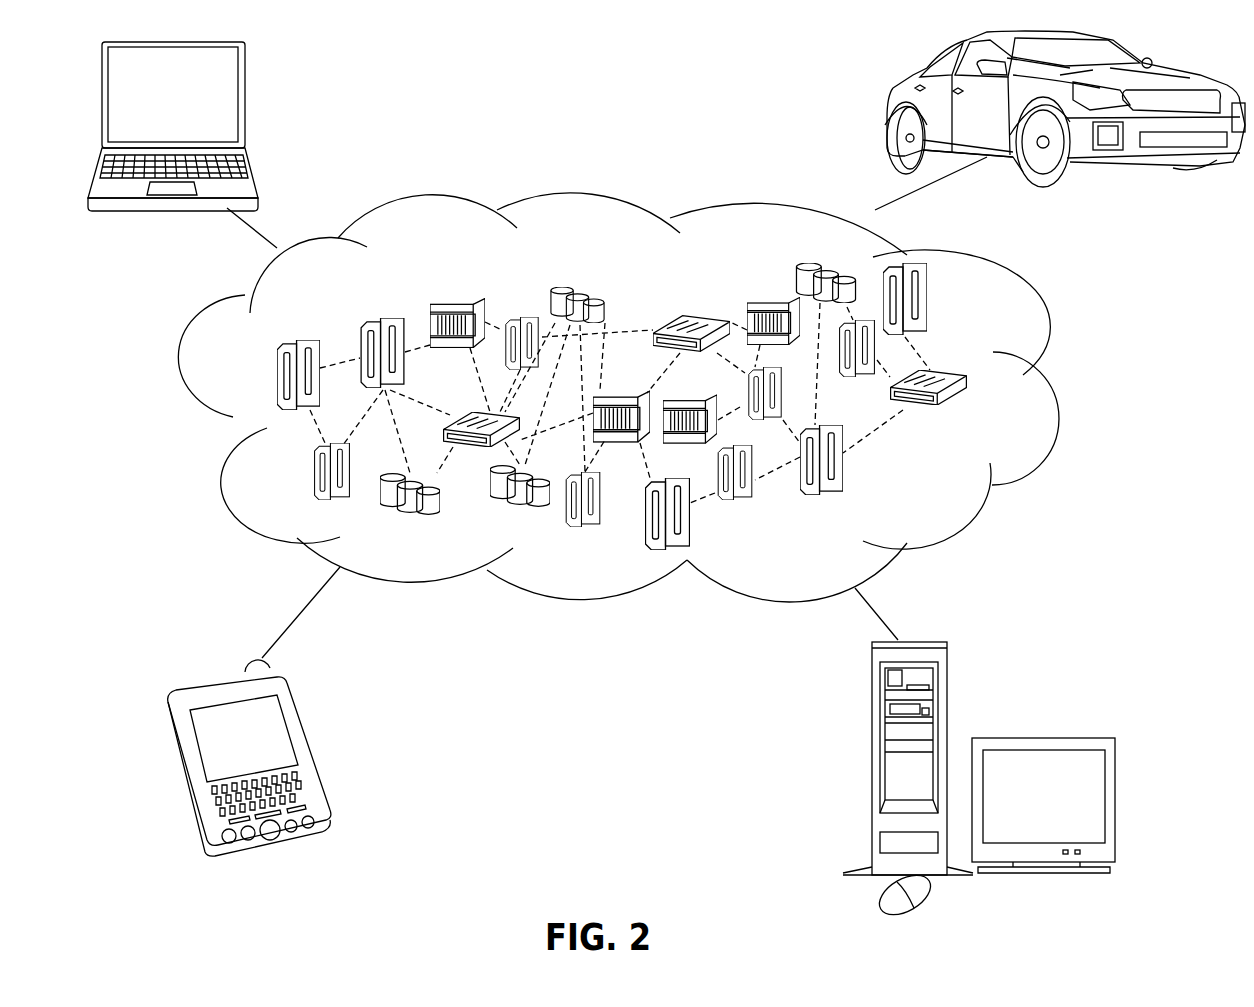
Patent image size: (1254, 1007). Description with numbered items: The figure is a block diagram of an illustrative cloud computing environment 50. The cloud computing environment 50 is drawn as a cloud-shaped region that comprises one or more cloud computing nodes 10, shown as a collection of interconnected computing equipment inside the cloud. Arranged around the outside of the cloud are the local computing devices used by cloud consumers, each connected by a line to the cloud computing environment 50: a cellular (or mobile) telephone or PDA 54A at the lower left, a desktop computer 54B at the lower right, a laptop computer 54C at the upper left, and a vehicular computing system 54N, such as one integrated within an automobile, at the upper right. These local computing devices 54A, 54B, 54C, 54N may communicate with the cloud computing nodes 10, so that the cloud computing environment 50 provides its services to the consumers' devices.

The cloud computing node 10 is at (947, 490).
The cloud computing environment 50 is at (1043, 387).
The cellular telephone or PDA 54A is at (300, 717).
The desktop computer 54B is at (872, 702).
The laptop computer 54C is at (245, 78).
The vehicular computing system 54N is at (885, 95).